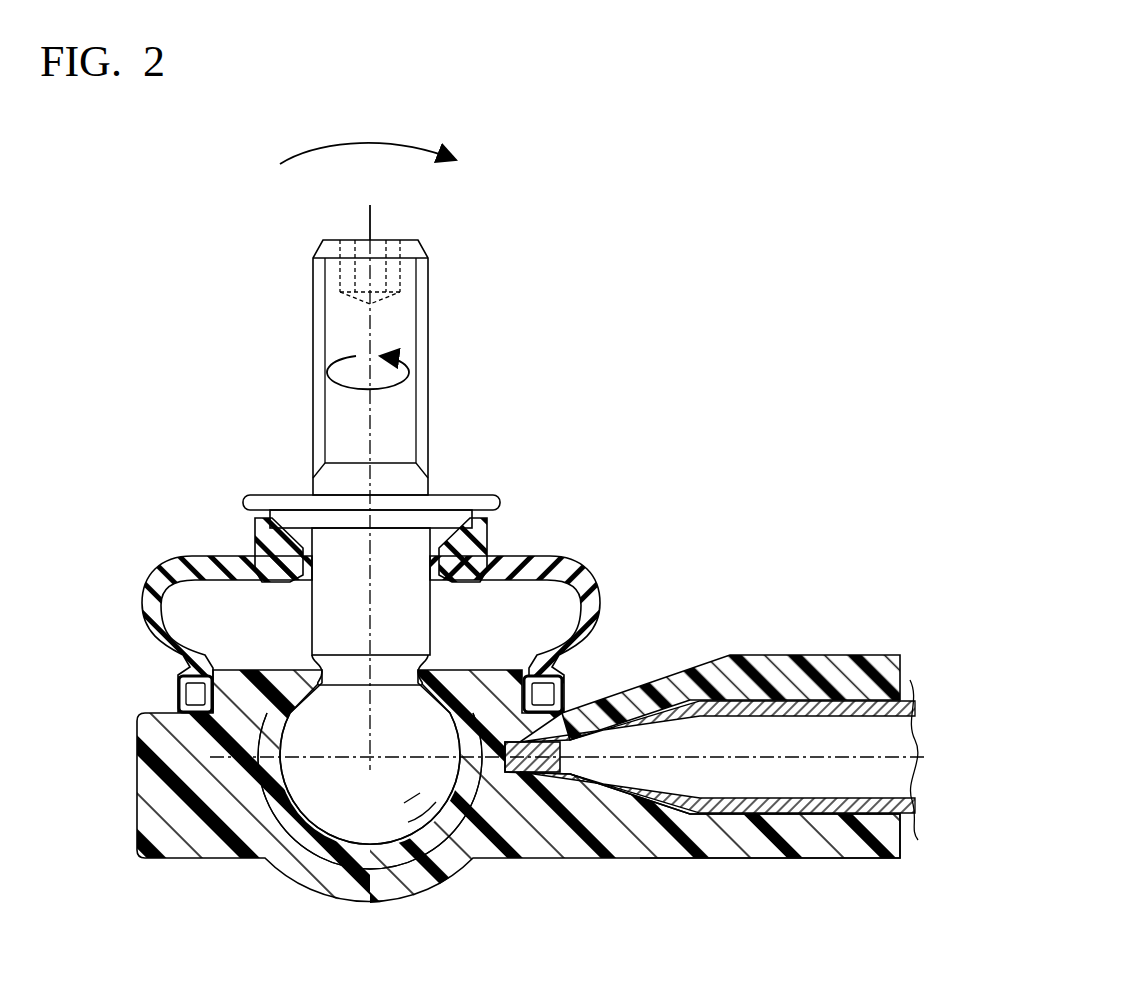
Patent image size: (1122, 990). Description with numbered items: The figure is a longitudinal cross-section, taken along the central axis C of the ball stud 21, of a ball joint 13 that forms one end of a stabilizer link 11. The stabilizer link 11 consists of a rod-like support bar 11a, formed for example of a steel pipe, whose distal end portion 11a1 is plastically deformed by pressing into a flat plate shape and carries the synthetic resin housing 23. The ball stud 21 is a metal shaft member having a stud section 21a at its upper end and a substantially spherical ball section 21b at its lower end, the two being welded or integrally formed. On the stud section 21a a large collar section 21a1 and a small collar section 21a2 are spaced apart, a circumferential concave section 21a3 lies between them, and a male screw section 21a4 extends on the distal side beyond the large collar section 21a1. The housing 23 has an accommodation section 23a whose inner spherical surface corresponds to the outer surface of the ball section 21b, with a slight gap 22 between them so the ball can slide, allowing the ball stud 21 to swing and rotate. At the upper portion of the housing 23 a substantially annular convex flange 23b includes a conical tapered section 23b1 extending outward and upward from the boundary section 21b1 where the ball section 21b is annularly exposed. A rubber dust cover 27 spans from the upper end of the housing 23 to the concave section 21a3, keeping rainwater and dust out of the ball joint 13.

The stabilizer link 11 is at (692, 282).
The support bar 11a is at (833, 700).
The distal end portion 11a1 is at (515, 774).
The ball joint 13 is at (128, 806).
The ball stud 21 is at (446, 318).
The stud section 21a is at (133, 240).
The large collar section 21a1 is at (470, 494).
The small collar section 21a2 is at (265, 560).
The circumferential concave section 21a3 is at (457, 548).
The male screw section 21a4 is at (313, 335).
The ball section 21b is at (333, 790).
The boundary section 21b1 is at (466, 755).
The slight gap 22 is at (472, 853).
The housing 23 is at (168, 828).
The accommodation section 23a is at (410, 832).
The convex flange 23b is at (533, 668).
The tapered section 23b1 is at (503, 687).
The dust cover 27 is at (588, 602).
The central axis C is at (373, 226).